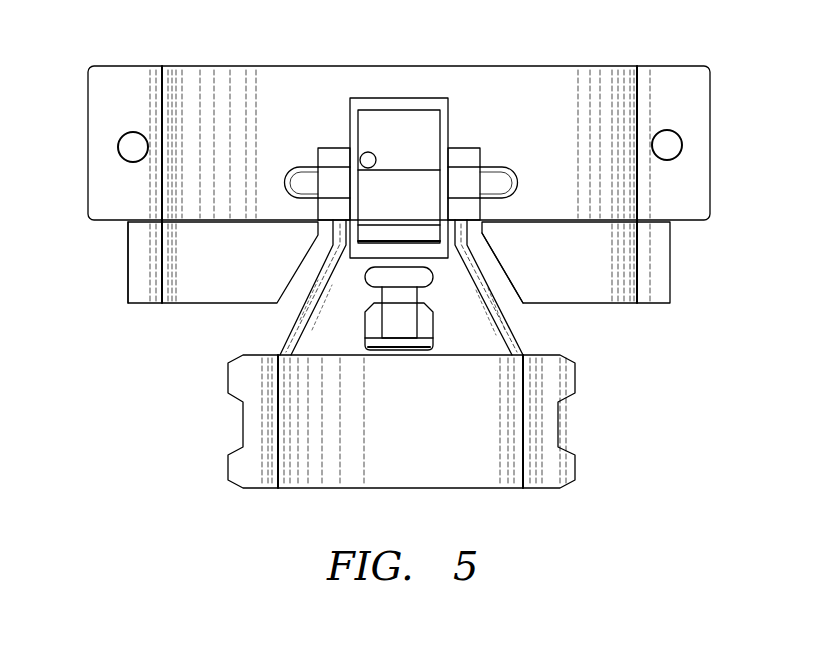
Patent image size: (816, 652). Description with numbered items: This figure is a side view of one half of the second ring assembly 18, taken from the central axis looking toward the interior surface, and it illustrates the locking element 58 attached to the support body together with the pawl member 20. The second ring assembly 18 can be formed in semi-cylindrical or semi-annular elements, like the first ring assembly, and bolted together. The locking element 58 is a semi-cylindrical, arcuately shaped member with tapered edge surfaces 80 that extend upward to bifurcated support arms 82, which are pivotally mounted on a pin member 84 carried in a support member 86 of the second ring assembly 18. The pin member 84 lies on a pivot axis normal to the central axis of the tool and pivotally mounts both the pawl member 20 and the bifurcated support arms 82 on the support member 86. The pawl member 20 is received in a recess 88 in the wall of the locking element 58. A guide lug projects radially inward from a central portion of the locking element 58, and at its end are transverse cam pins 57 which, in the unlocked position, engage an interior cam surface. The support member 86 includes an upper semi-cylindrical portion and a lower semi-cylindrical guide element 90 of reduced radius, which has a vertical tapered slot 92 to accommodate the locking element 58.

The second ring assembly 18 is at (177, 100).
The pawl member 20 is at (421, 197).
The cam pins 57 is at (378, 282).
The locking element 58 is at (222, 352).
The tapered edge surfaces 80 is at (493, 288).
The bifurcated support arms 82 is at (333, 157).
The pin member 84 is at (303, 184).
The support member 86 is at (630, 93).
The recess 88 is at (352, 132).
The guide element 90 is at (148, 253).
The tapered slot 92 is at (495, 258).